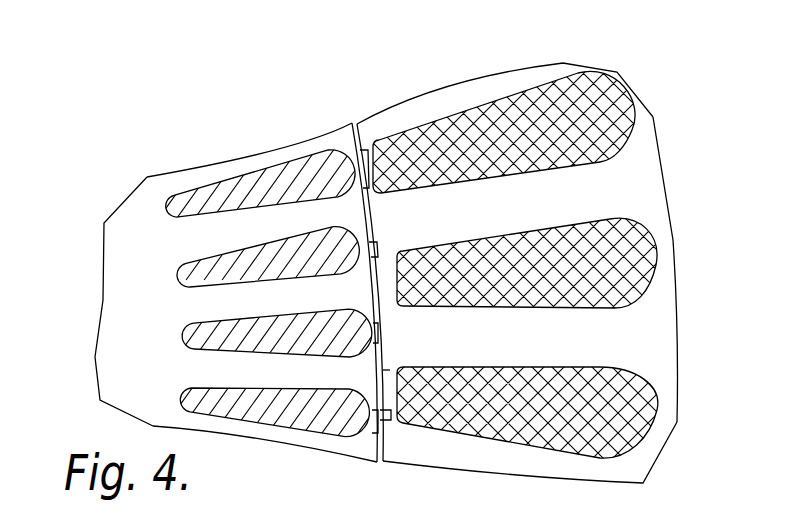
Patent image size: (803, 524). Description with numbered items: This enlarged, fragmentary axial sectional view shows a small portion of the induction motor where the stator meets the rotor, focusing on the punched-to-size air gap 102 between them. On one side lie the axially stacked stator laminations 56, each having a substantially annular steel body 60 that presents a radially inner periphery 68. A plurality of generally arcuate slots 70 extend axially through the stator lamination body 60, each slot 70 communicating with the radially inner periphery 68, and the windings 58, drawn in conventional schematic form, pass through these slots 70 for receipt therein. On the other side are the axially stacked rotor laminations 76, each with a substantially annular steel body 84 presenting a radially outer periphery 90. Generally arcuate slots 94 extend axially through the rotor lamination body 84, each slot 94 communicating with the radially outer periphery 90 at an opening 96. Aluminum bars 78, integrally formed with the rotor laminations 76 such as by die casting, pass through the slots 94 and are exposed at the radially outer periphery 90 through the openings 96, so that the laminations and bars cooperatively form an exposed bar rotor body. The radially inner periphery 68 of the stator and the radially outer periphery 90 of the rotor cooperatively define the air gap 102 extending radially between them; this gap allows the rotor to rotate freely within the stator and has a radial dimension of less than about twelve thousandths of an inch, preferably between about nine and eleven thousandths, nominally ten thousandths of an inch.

The stator lamination 56 is at (518, 60).
The windings 58 is at (623, 394).
The stator lamination body 60 is at (647, 176).
The radially inner periphery 68 is at (400, 339).
The slot 70 is at (486, 455).
The rotor lamination 76 is at (208, 152).
The aluminum bar 78 is at (208, 398).
The rotor lamination body 84 is at (132, 253).
The radially outer periphery 90 is at (367, 368).
The slot 94 is at (280, 447).
The opening 96 is at (392, 237).
The air gap 102 is at (350, 135).